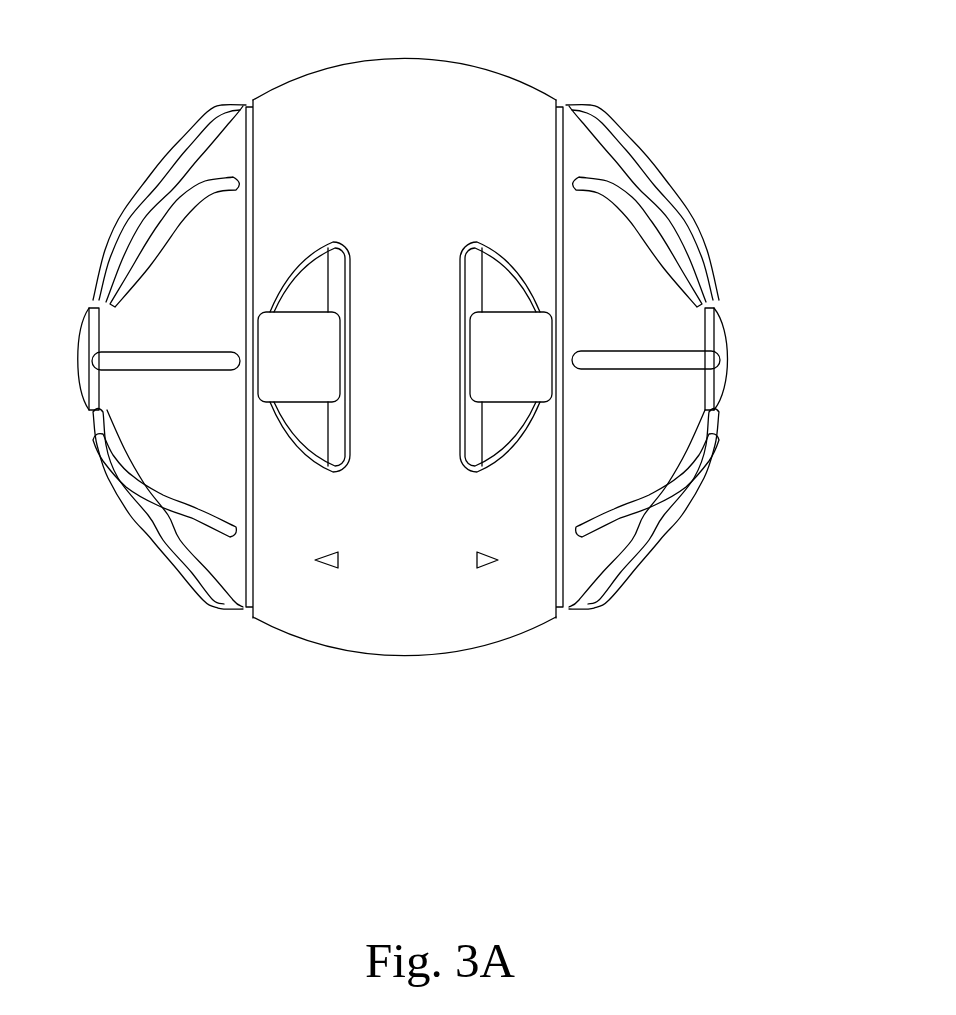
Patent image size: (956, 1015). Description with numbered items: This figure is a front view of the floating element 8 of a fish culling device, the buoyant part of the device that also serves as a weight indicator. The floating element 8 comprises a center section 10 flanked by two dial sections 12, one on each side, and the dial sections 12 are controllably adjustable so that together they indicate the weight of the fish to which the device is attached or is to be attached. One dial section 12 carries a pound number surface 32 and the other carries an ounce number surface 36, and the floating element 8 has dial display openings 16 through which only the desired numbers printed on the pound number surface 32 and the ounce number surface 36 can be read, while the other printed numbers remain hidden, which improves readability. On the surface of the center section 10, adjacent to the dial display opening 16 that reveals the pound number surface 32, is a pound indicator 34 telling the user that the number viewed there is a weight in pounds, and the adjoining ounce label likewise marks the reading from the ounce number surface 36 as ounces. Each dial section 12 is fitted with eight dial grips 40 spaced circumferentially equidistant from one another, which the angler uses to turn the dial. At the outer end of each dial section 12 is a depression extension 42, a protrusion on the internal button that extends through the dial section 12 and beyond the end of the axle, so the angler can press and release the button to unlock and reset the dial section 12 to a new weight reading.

The floating element 8 is at (703, 79).
The center section 10 is at (518, 602).
The dial section 12 is at (177, 453).
The dial display opening 16 is at (500, 327).
The pound number surface 32 is at (280, 342).
The pound indicator 34 is at (291, 505).
The ounce number surface 36 is at (520, 328).
The dial grip 40 is at (670, 192).
The depression extension 42 is at (93, 407).